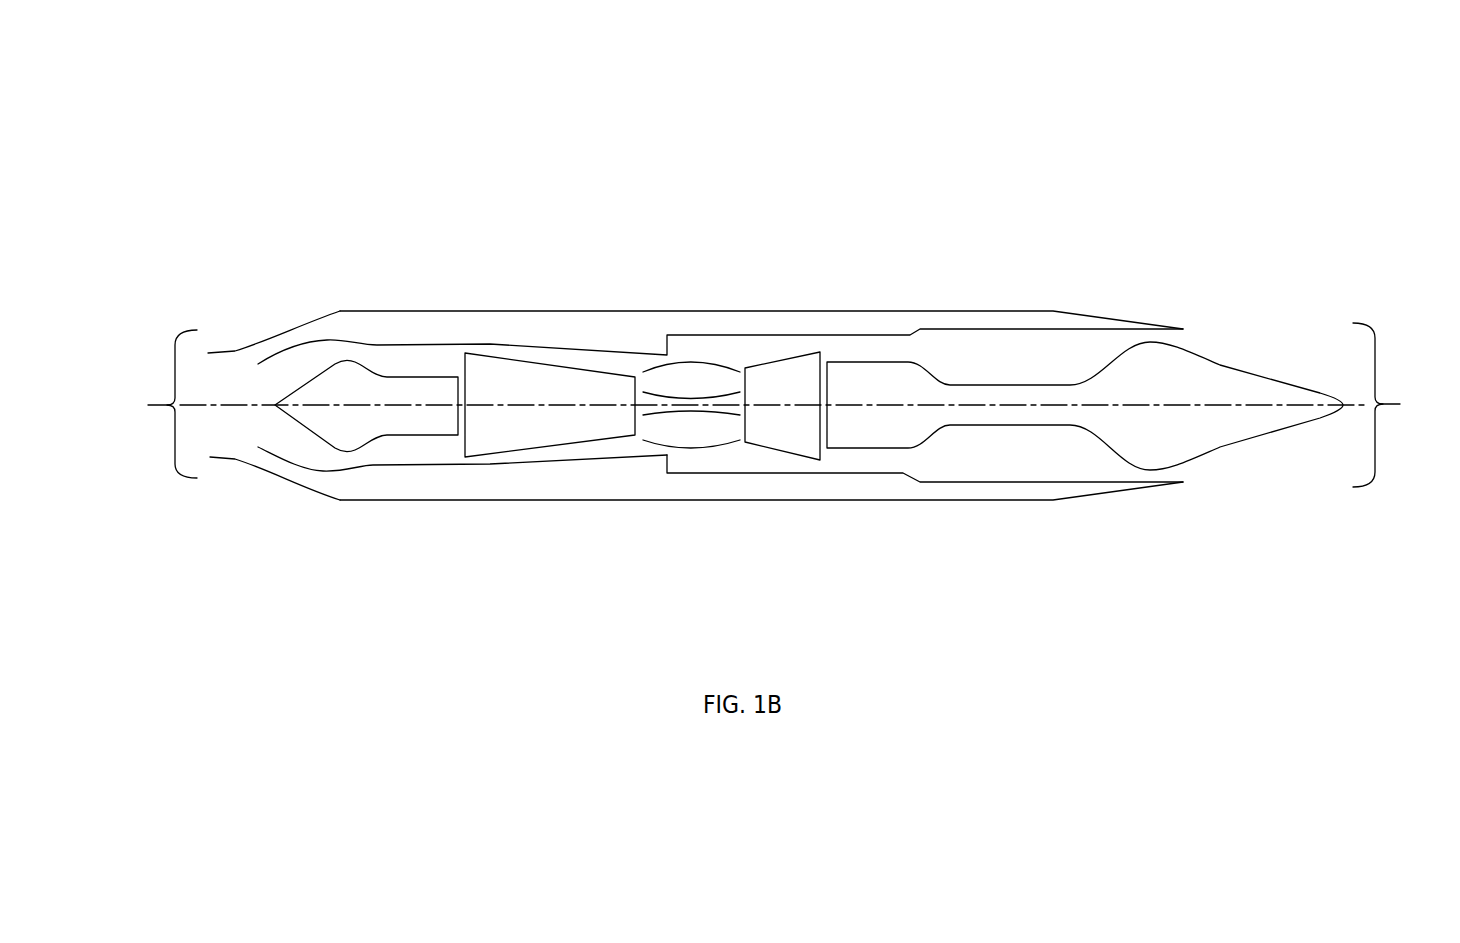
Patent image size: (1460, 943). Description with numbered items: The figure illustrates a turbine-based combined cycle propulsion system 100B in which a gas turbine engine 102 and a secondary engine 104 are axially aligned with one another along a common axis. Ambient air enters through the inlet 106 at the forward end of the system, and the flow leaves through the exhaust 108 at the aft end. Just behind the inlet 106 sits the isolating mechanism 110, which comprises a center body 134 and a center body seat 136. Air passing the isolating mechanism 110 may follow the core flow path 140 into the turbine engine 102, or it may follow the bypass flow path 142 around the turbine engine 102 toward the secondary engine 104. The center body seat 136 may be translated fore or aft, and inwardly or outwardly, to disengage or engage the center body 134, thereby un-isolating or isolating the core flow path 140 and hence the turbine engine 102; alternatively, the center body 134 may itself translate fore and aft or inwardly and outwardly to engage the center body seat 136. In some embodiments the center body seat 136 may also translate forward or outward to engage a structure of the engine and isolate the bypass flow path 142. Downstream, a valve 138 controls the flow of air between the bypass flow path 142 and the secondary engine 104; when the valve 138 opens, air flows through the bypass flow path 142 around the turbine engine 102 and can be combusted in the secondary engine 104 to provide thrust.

The turbine-based combined cycle propulsion system 100B is at (1253, 93).
The gas turbine engine 102 is at (710, 290).
The secondary engine 104 is at (1007, 465).
The inlet 106 is at (138, 404).
The exhaust 108 is at (1402, 405).
The isolating mechanism 110 is at (273, 320).
The center body 134 is at (416, 394).
The center body seat 136 is at (293, 467).
The valve 138 is at (908, 475).
The core flow path 140 is at (290, 445).
The bypass flow path 142 is at (585, 480).